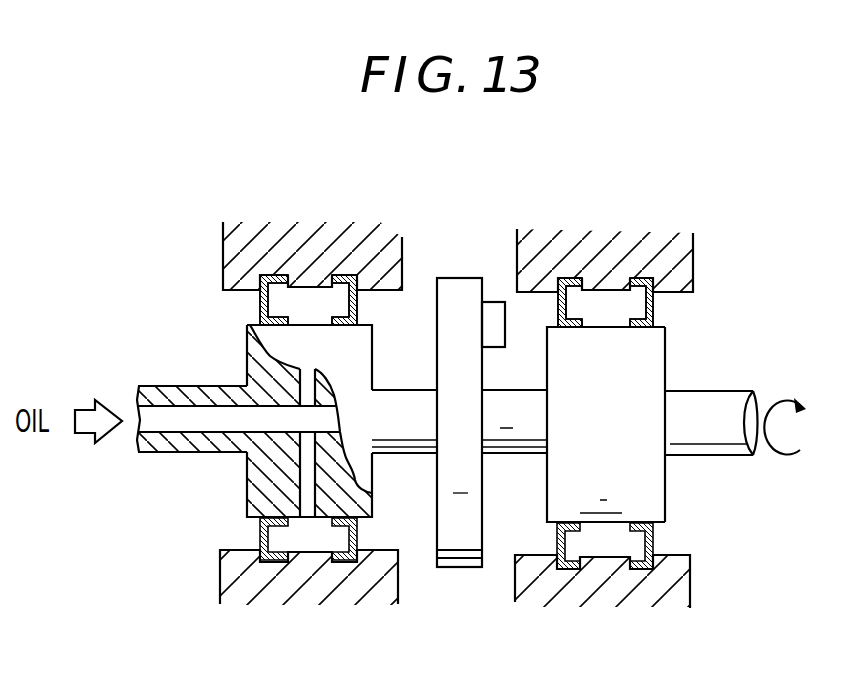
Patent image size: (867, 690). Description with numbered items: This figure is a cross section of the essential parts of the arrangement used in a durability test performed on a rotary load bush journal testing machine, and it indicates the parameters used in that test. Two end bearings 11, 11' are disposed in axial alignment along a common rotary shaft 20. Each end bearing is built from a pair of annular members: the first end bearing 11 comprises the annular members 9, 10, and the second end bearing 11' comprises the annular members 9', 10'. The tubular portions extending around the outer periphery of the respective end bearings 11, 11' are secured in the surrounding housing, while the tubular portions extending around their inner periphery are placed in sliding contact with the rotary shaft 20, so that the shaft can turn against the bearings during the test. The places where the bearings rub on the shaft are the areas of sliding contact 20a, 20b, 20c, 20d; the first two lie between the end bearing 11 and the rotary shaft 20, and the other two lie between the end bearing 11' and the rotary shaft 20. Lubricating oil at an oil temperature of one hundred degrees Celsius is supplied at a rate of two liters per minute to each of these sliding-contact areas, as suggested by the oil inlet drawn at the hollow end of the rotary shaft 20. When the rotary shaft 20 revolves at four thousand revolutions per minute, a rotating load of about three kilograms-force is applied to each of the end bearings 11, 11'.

The annular member 9 is at (240, 417).
The annular member 10 is at (381, 417).
The end bearing 11 is at (256, 296).
The annular member 9' is at (543, 423).
The annular member 10' is at (697, 423).
The end bearing 11' is at (656, 320).
The rotary shaft 20 is at (140, 459).
The area of sliding contact 20a is at (264, 517).
The area of sliding contact 20b is at (342, 517).
The area of sliding contact 20c is at (567, 522).
The area of sliding contact 20d is at (633, 523).